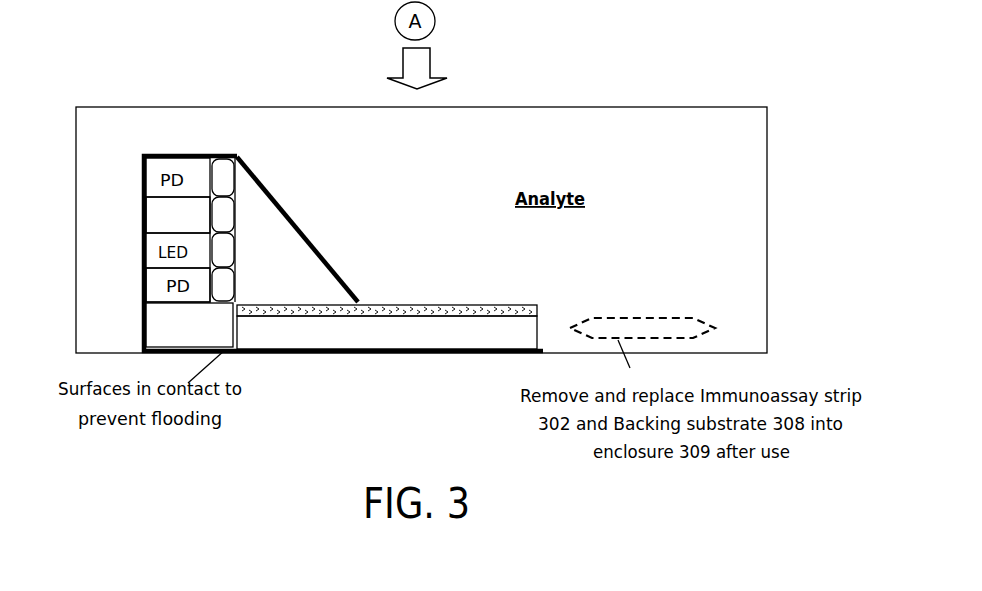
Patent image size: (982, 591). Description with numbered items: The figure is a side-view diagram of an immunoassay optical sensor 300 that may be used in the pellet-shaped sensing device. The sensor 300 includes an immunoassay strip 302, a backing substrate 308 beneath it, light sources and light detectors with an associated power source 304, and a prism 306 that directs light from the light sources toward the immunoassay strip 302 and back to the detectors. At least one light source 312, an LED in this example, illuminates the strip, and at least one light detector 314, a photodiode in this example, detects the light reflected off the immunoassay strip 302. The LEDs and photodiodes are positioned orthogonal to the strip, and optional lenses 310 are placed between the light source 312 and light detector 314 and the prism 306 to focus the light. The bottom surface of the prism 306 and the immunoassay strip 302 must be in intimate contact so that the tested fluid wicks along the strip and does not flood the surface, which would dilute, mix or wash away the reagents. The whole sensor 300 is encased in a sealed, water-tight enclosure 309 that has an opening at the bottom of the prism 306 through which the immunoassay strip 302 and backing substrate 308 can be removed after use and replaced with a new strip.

The immunoassay optical sensor 300 is at (138, 122).
The immunoassay strip 302 is at (230, 340).
The power source 304 is at (189, 326).
The prism 306 is at (290, 244).
The backing substrate 308 is at (387, 332).
The sealed enclosure 309 is at (245, 156).
The lenses 310 is at (226, 178).
The light source 312 is at (156, 213).
The light detector 314 is at (156, 285).